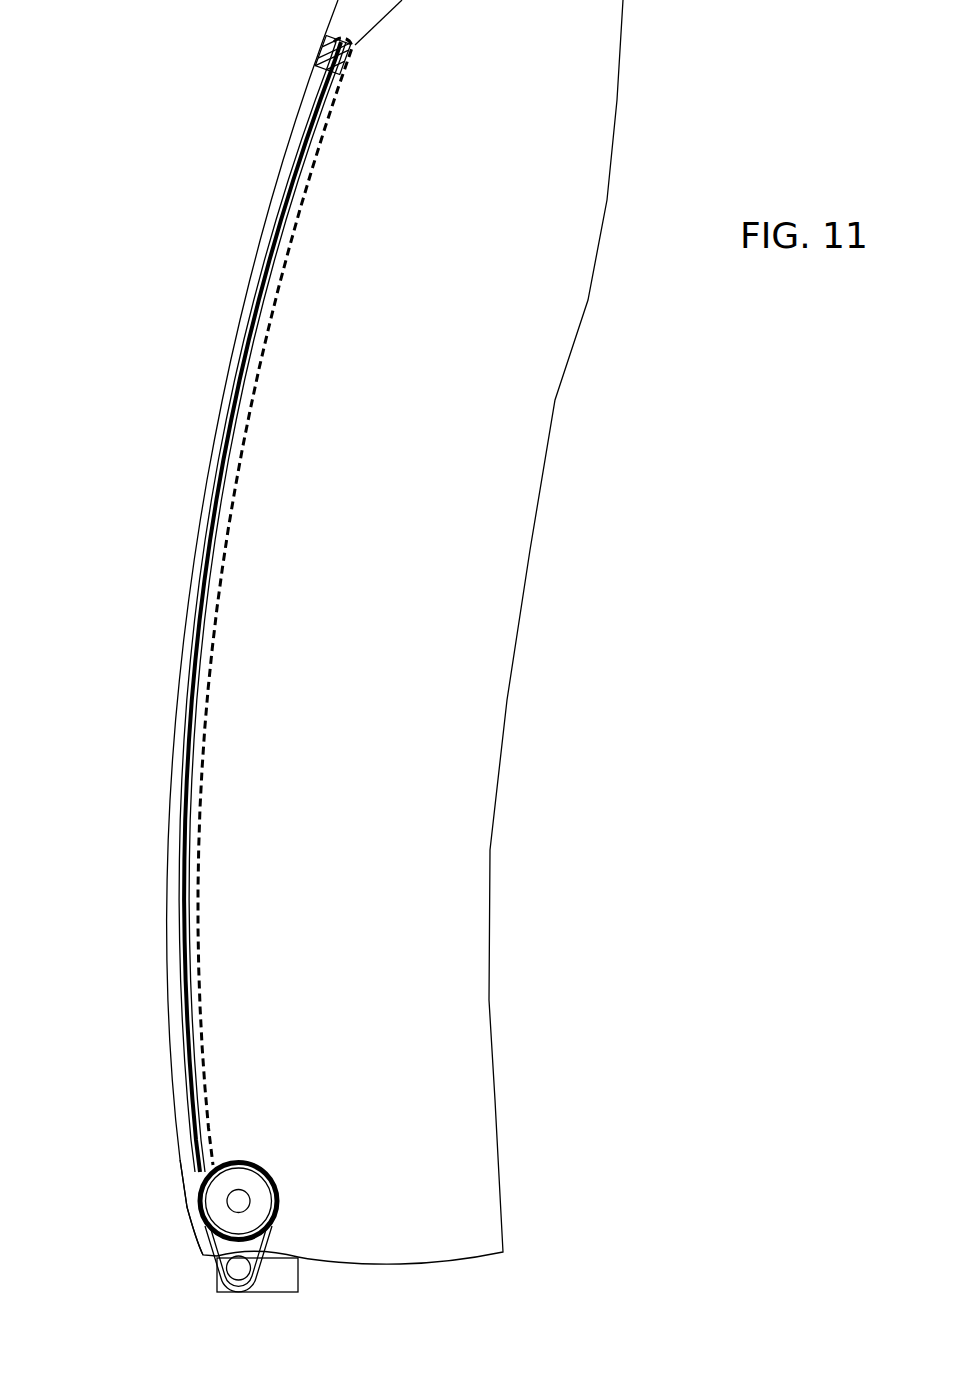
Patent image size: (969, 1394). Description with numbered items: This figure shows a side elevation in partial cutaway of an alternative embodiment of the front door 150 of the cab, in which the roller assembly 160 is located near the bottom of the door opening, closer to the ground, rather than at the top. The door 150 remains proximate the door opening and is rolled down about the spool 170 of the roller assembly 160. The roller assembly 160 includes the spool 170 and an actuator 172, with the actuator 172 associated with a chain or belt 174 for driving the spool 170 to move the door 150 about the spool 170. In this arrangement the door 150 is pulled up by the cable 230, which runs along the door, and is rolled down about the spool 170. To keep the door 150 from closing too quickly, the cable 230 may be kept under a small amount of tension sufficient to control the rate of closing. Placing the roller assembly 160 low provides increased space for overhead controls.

The door 150 is at (222, 471).
The cable 230 is at (204, 790).
The spool 170 is at (260, 1184).
The chain or belt 174 is at (265, 1242).
The actuator 172 is at (277, 1268).
The roller assembly 160 is at (188, 1207).